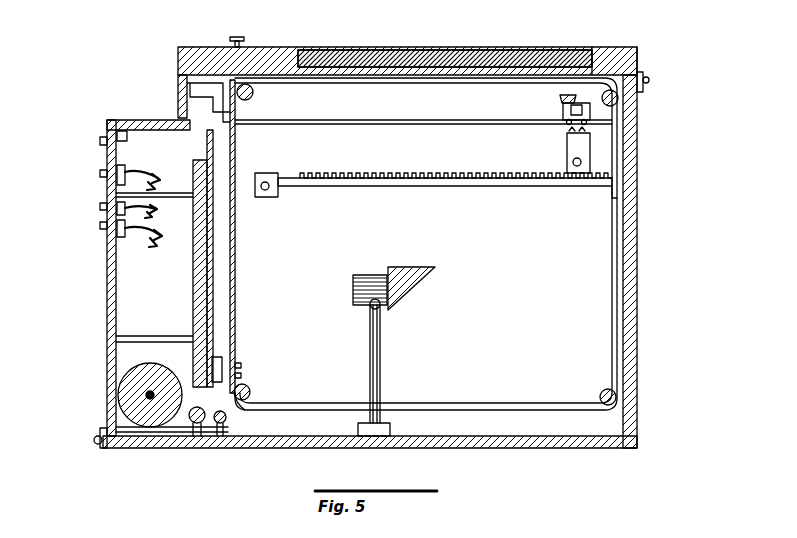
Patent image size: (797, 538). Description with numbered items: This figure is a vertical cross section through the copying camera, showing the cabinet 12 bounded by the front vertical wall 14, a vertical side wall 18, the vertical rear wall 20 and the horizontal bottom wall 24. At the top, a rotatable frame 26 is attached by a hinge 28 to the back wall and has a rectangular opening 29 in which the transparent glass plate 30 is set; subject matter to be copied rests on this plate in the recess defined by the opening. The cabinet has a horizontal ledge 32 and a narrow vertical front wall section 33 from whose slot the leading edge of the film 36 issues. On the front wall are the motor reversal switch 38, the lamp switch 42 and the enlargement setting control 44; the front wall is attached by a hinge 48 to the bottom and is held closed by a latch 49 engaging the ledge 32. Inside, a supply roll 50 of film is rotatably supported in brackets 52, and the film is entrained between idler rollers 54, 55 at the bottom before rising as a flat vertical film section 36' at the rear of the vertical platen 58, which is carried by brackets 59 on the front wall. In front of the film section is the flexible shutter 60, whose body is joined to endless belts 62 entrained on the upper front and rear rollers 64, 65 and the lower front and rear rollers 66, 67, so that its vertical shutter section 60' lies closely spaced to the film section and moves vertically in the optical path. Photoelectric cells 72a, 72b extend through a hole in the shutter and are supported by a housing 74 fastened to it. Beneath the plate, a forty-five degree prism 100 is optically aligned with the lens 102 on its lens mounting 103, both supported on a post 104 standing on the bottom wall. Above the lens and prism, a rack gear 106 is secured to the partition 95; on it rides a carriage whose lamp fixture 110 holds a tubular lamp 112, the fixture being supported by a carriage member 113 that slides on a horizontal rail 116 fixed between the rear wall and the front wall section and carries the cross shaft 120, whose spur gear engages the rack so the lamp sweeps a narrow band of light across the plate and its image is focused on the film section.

The cabinet 12 is at (651, 143).
The front vertical wall 14 is at (107, 348).
The vertical side wall 18 is at (130, 288).
The vertical rear wall 20 is at (630, 216).
The horizontal bottom wall 24 is at (472, 448).
The rotatable frame 26 is at (285, 47).
The hinge 28 is at (650, 78).
The rectangular opening 29 is at (575, 60).
The transparent glass plate 30 is at (392, 52).
The horizontal ledge 32 is at (122, 120).
The narrow vertical front wall section 33 is at (178, 88).
The film strip or sheet 36 is at (199, 448).
The flat vertical film section 36' is at (243, 258).
The switch 38 is at (105, 173).
The ON-OFF lamp switch 42 is at (105, 228).
The enlargement setting control 44 is at (100, 207).
The hinge 48 is at (94, 440).
The latch 49 is at (140, 120).
The supply roll 50 is at (150, 425).
The brackets 52 is at (152, 448).
The idler roller 54 is at (200, 448).
The idler roller 55 is at (240, 434).
The vertical platen 58 is at (193, 260).
The brackets 59 is at (152, 335).
The flexible shutter 60 is at (263, 236).
The vertical shutter section 60' is at (240, 258).
The endless belts 62 is at (492, 402).
The upper front roller 64 is at (252, 96).
The upper rear roller 65 is at (618, 98).
The lower front roller 66 is at (260, 398).
The lower rear roller 67 is at (605, 403).
The photoelectric cell 72a is at (242, 377).
The photoelectric cell 72b is at (242, 370).
The housing 74 is at (223, 365).
The partition 95 is at (652, 327).
The 45° prism 100 is at (412, 286).
The lens 102 is at (352, 288).
The lens mounting 103 is at (372, 276).
The post 104 is at (381, 356).
The rack gear 106 is at (527, 190).
The lamp fixture 110 is at (560, 98).
The tubular lamp 112 is at (563, 112).
The carriage member 113 is at (567, 150).
The horizontal rail 116 is at (430, 128).
The cross shaft 120 is at (573, 163).